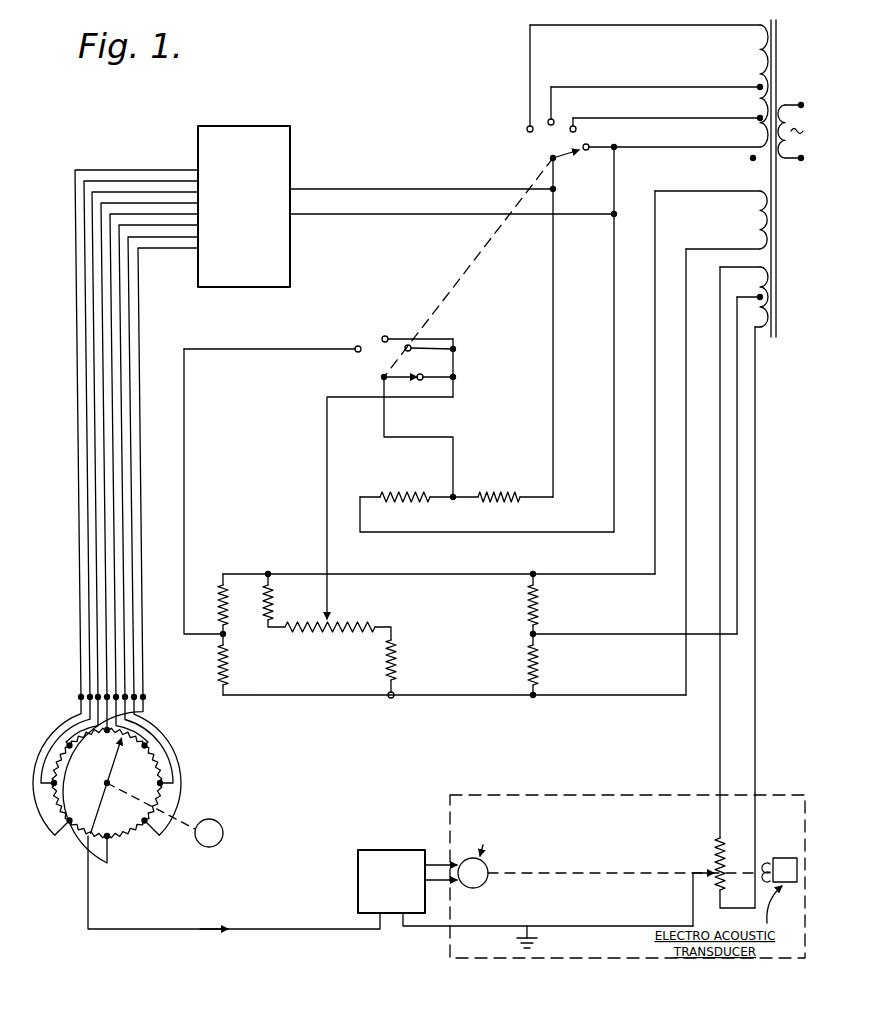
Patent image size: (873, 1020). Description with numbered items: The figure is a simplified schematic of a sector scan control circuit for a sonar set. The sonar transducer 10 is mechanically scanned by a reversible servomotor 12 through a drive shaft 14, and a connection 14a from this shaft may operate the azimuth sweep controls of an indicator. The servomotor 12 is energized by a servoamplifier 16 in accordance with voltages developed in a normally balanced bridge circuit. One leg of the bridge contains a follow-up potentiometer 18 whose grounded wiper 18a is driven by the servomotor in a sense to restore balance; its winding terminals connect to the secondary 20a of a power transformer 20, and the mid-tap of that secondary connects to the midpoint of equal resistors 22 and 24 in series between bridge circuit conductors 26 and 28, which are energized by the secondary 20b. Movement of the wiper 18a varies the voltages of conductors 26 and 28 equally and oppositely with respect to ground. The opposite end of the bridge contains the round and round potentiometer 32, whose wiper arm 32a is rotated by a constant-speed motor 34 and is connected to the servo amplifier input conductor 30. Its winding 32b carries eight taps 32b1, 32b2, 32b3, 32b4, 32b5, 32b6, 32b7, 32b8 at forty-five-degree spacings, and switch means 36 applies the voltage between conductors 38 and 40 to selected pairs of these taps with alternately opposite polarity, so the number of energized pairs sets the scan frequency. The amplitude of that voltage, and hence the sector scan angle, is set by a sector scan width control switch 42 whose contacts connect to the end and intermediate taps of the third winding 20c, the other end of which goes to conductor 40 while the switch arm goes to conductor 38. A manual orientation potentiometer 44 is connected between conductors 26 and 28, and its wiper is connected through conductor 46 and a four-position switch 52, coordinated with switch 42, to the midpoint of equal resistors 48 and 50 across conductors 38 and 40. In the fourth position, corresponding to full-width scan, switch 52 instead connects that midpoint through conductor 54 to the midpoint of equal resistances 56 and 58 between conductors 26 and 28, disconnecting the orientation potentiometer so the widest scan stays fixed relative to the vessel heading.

The sonar transducer 10 is at (784, 857).
The reversible servomotor 12 is at (488, 865).
The drive shaft 14 is at (562, 873).
The connection 14a is at (615, 888).
The servoamplifier 16 is at (425, 916).
The follow-up potentiometer 18 is at (715, 845).
The wiper 18a is at (700, 877).
The power transformer 20 is at (751, 198).
The secondary 20a is at (762, 337).
The secondary 20b is at (758, 220).
The third winding 20c is at (758, 47).
The resistor 22 is at (538, 606).
The resistor 24 is at (538, 666).
The bridge circuit conductor 26 is at (595, 574).
The bridge circuit conductor 28 is at (595, 695).
The servo amplifier input conductor 30 is at (190, 930).
The round and round potentiometer 32 is at (176, 796).
The wiper arm 32a is at (118, 750).
The potentiometer winding 32b is at (100, 790).
The tap 32b1 is at (110, 730).
The tap 32b2 is at (148, 745).
The tap 32b3 is at (163, 784).
The tap 32b4 is at (146, 824).
The tap 32b5 is at (105, 863).
The tap 32b6 is at (62, 835).
The tap 32b7 is at (41, 790).
The tap 32b8 is at (66, 742).
The constant-speed motor 34 is at (223, 830).
The switch means 36 is at (290, 160).
The bridge circuit conductor 38 is at (308, 189).
The bridge circuit conductor 40 is at (302, 214).
The sector scan width control switch 42 is at (571, 107).
The manual orientation potentiometer 44 is at (312, 632).
The conductor 46 is at (327, 460).
The resistor 48 is at (416, 492).
The resistor 50 is at (502, 492).
The four-position switch 52 is at (368, 327).
The conductor 54 is at (184, 483).
The resistance 56 is at (228, 612).
The resistance 58 is at (228, 665).